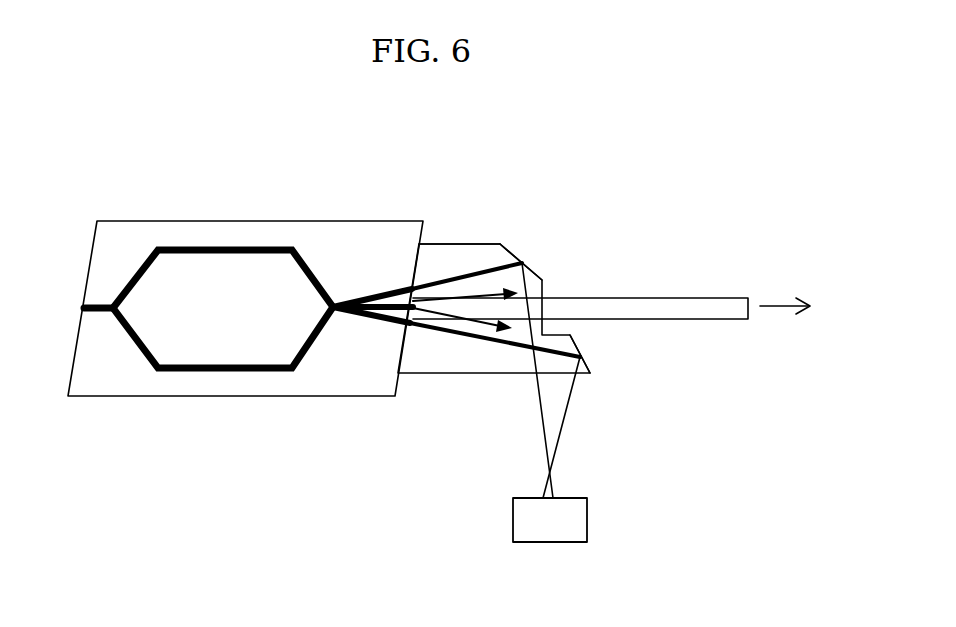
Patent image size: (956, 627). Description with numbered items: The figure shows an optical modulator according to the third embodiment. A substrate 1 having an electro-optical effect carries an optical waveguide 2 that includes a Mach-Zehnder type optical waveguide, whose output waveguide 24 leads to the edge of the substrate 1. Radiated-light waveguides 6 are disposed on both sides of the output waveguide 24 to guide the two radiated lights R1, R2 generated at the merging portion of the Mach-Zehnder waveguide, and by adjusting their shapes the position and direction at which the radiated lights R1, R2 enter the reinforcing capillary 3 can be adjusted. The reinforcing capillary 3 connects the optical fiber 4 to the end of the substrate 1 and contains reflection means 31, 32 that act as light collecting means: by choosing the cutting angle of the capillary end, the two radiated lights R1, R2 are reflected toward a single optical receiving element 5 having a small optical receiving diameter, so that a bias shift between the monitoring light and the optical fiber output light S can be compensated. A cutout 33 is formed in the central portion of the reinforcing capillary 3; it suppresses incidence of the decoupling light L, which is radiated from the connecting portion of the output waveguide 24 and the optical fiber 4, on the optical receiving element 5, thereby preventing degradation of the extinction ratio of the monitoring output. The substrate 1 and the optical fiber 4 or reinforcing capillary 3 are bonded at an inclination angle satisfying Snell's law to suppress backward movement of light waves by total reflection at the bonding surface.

The substrate 1 is at (162, 233).
The optical waveguide 2 is at (207, 232).
The output waveguide 24 is at (388, 303).
The radiated-light waveguides 6 is at (385, 320).
The reinforcing capillary 3 is at (487, 370).
The reflection means 31 is at (508, 245).
The cutout 33 is at (545, 288).
The reflection means 32 is at (577, 352).
The decoupling light L is at (508, 291).
The optical fiber 4 is at (677, 306).
The optical fiber output light S is at (795, 307).
The radiated light R1 is at (533, 380).
The radiated light R2 is at (574, 427).
The optical receiving element 5 is at (573, 518).